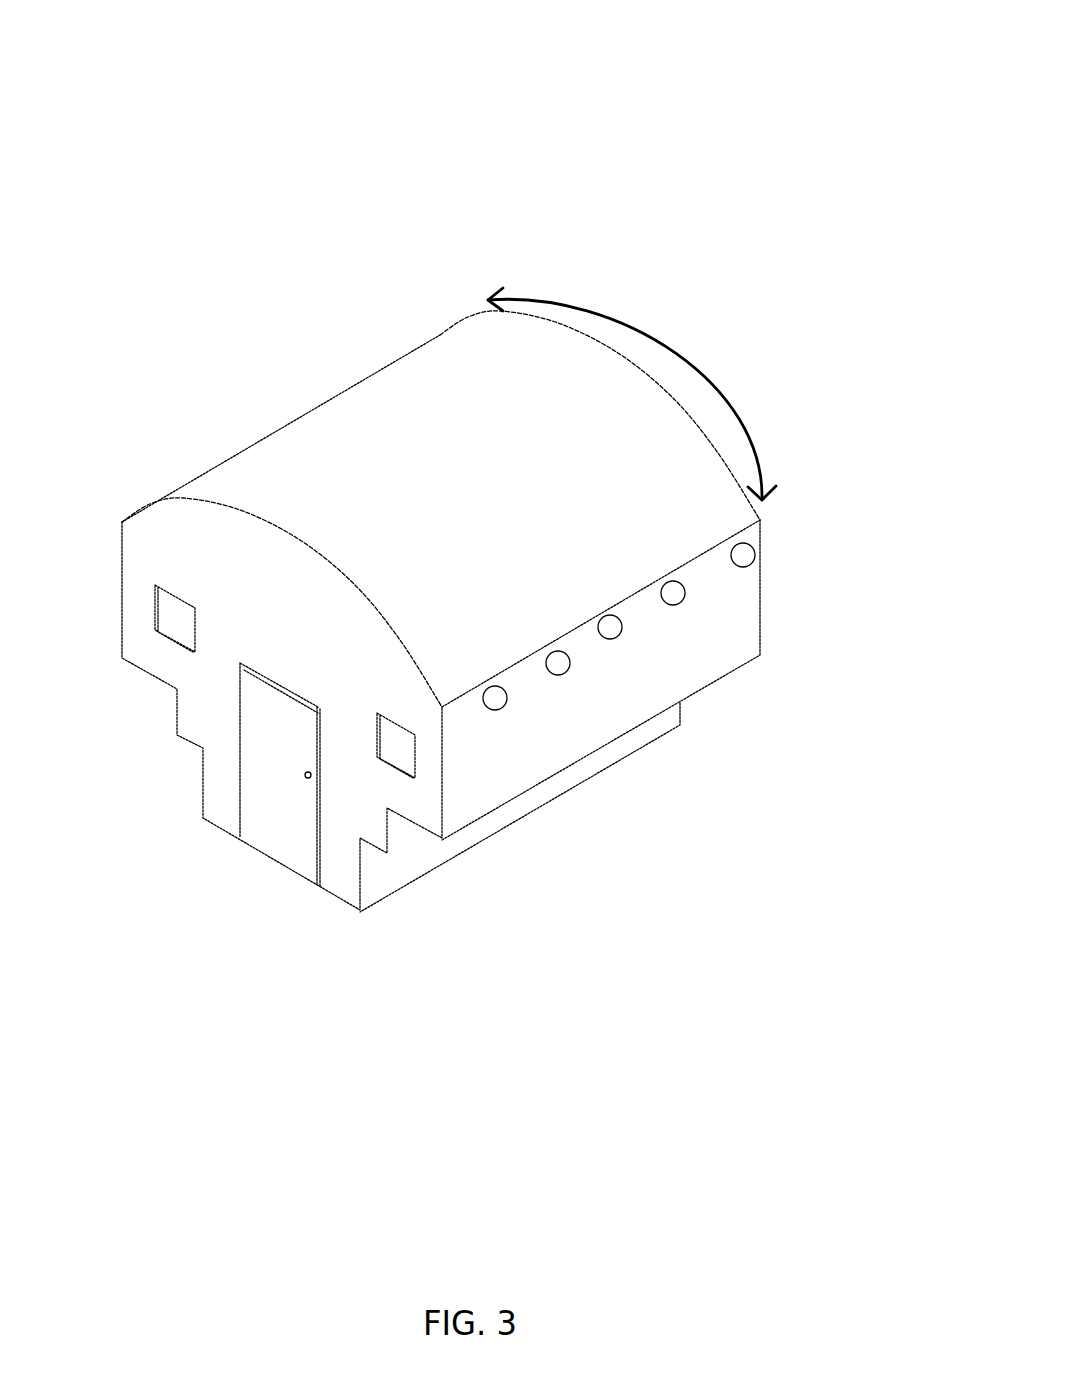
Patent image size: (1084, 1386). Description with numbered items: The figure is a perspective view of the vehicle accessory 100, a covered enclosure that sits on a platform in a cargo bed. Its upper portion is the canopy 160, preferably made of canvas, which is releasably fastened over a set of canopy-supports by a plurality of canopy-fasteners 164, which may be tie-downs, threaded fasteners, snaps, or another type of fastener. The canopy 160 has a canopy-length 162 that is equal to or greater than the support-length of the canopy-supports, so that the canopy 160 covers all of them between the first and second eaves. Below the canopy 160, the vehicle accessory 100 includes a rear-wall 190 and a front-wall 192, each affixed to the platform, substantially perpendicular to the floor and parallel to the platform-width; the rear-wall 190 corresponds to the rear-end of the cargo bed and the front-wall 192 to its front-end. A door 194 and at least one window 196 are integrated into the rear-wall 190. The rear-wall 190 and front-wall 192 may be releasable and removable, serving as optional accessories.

The vehicle accessory 100 is at (498, 541).
The canopy 160 is at (423, 373).
The canopy-length 162 is at (568, 305).
The plurality of canopy-fasteners 164 is at (676, 597).
The rear-wall 190 is at (686, 735).
The front-wall 192 is at (347, 920).
The door 194 is at (287, 835).
The window 196 is at (167, 612).